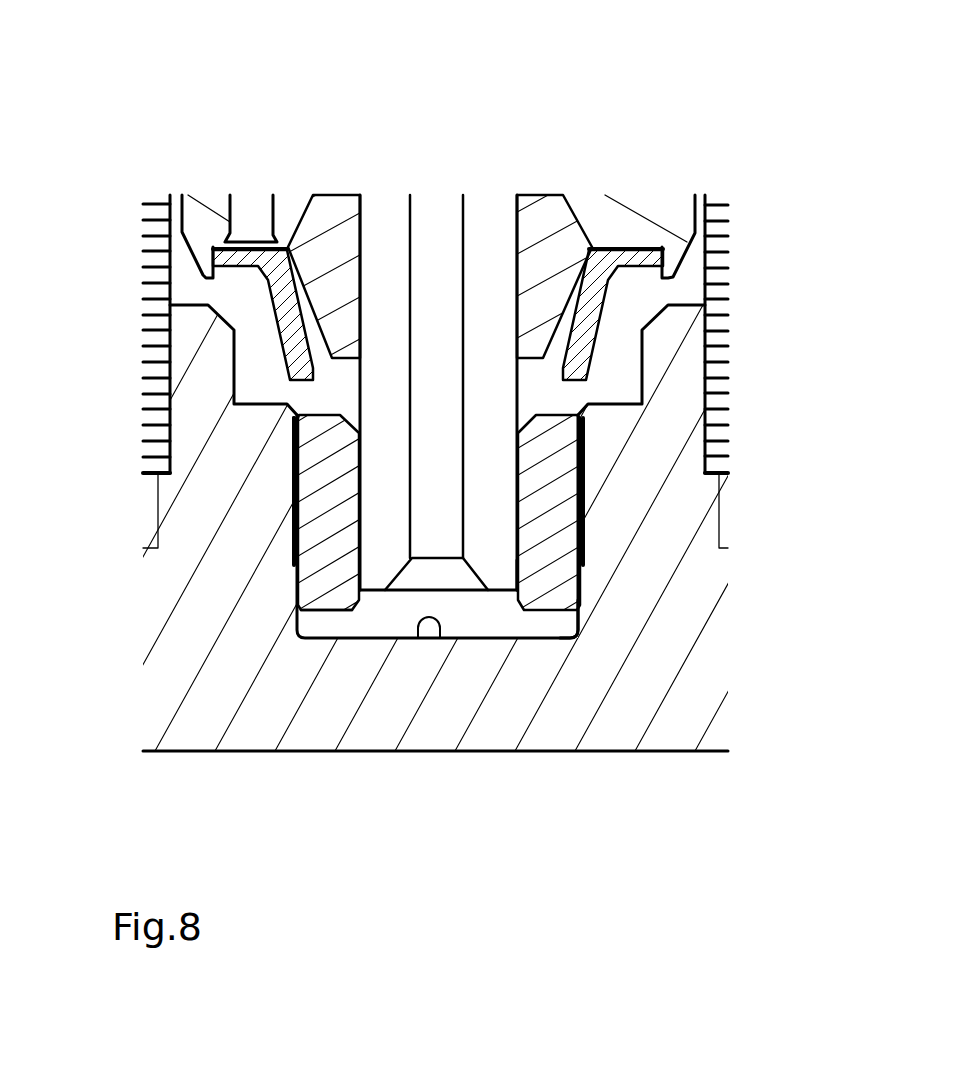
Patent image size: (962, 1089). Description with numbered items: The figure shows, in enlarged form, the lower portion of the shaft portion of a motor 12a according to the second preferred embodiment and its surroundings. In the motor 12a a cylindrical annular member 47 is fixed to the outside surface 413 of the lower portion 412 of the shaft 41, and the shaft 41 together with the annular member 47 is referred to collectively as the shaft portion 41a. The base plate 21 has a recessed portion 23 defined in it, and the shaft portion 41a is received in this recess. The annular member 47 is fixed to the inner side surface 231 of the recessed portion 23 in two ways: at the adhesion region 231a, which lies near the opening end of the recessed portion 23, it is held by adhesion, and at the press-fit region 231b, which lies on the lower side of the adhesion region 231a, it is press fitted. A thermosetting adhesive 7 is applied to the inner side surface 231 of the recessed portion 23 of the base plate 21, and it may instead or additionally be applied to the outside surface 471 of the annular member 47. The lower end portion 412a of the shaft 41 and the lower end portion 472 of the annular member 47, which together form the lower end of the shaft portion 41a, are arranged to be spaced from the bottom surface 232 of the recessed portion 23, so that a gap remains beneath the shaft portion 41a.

The motor 12a is at (180, 88).
The shaft portion 41a is at (426, 86).
The shaft 41 is at (472, 270).
The lower portion of the shaft 412 is at (395, 455).
The lower end portion of the shaft 412a is at (373, 573).
The outside surface of the lower portion of the shaft 413 is at (287, 248).
The recessed portion 23 is at (565, 414).
The thermosetting adhesive 7 is at (292, 445).
The annular member 47 is at (317, 491).
The outside surface of the annular member 471 is at (292, 527).
The lower end portion of the annular member 472 is at (325, 592).
The inner side surface 231 is at (540, 603).
The adhesion region 231a is at (518, 577).
The press-fit region 231b is at (573, 598).
The bottom surface 232 is at (418, 625).
The base plate 21 is at (634, 715).